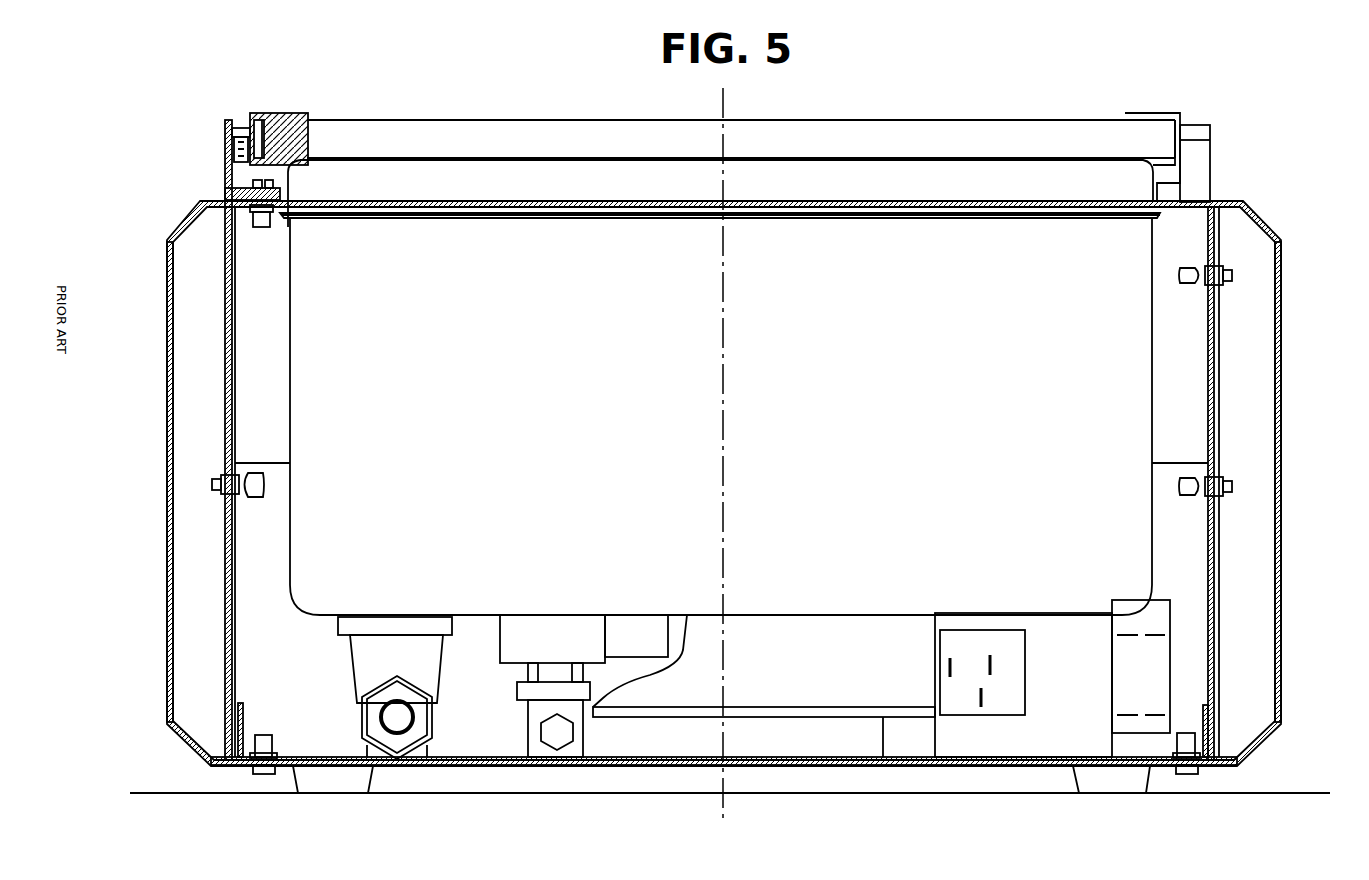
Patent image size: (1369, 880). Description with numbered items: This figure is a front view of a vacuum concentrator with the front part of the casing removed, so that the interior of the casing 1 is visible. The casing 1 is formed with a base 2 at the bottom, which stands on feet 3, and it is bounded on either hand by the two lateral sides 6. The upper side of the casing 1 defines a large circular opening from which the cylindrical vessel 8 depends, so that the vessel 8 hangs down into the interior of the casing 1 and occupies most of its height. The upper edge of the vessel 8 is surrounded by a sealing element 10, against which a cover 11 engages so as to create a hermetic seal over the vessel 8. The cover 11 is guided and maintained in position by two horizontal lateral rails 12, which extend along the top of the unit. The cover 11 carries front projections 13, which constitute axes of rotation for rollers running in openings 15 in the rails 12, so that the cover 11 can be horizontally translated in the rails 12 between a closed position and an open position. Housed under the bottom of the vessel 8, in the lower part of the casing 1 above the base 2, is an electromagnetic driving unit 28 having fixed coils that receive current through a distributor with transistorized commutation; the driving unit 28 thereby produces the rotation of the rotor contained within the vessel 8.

The casing 1 is at (1277, 521).
The base 2 is at (625, 765).
The feet 3 is at (363, 778).
The lateral sides 6 is at (168, 640).
The cylindrical vessel 8 is at (325, 545).
The sealing element 10 is at (1025, 177).
The cover 11 is at (487, 135).
The lateral rails 12 is at (224, 131).
The front projections 13 is at (232, 150).
The openings 15 is at (238, 123).
The electromagnetic driving unit 28 is at (803, 690).